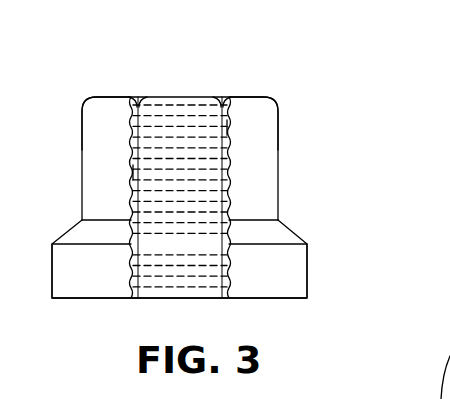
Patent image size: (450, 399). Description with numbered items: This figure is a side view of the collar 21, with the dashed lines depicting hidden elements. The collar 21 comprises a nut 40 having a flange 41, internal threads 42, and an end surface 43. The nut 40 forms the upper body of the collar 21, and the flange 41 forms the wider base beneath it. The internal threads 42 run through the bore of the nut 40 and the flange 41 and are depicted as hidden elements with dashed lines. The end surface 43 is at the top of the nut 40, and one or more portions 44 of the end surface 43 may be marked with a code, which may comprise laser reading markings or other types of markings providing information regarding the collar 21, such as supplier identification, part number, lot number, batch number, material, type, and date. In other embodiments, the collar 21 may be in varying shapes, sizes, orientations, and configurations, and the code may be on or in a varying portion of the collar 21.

The collar 21 is at (284, 92).
The nut 40 is at (278, 165).
The flange 41 is at (307, 268).
The internal threads 42 is at (131, 172).
The end surface 43 is at (179, 97).
The portions of the end surface 44 is at (106, 97).